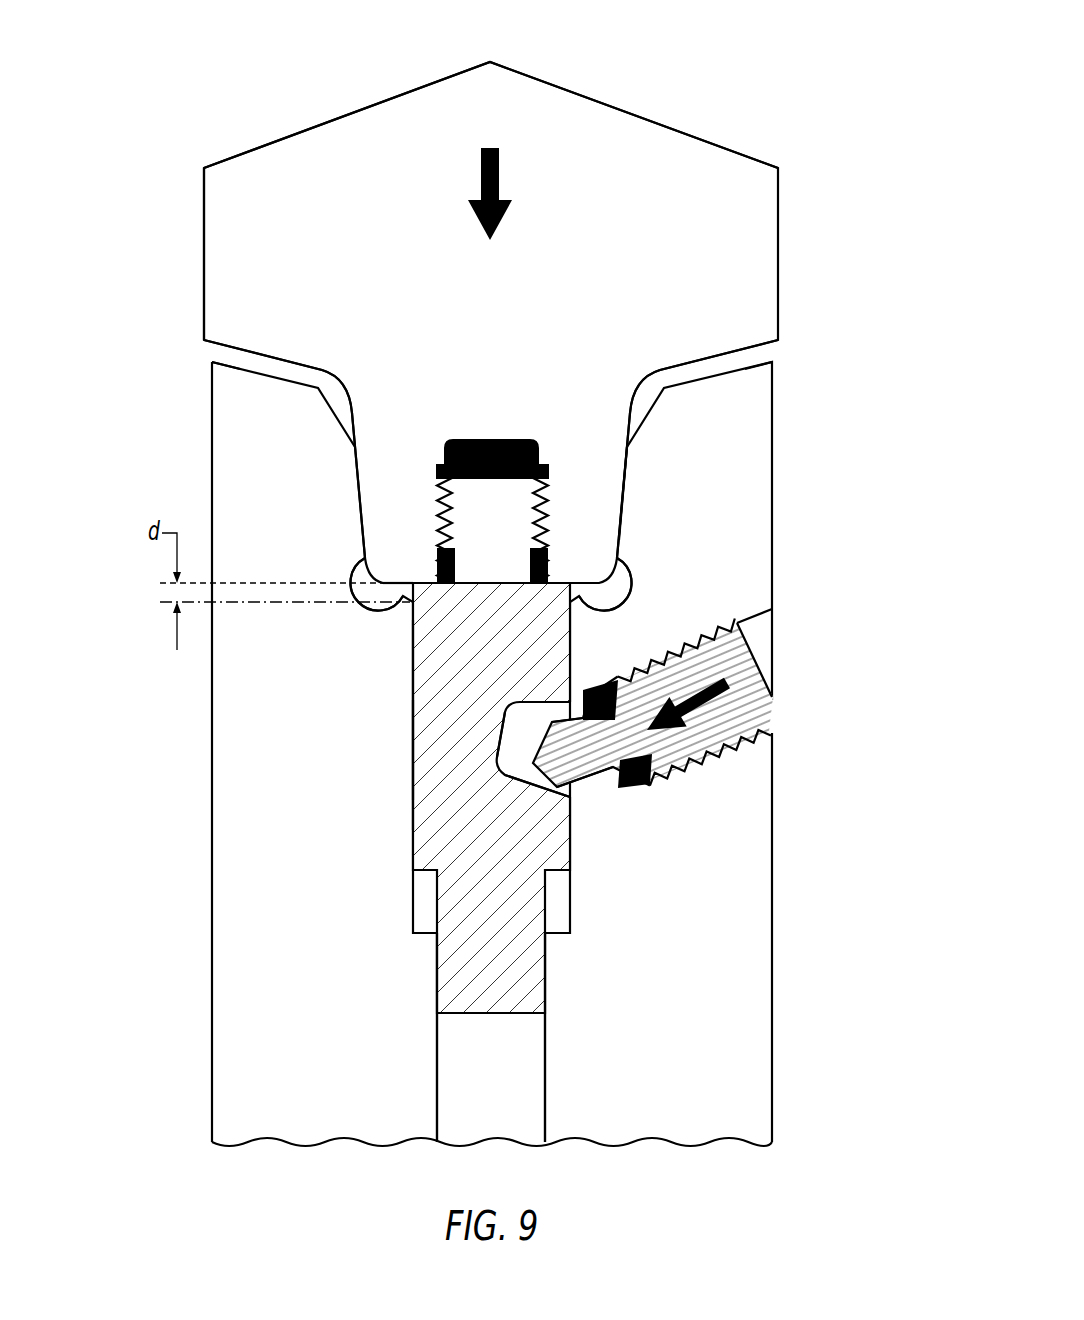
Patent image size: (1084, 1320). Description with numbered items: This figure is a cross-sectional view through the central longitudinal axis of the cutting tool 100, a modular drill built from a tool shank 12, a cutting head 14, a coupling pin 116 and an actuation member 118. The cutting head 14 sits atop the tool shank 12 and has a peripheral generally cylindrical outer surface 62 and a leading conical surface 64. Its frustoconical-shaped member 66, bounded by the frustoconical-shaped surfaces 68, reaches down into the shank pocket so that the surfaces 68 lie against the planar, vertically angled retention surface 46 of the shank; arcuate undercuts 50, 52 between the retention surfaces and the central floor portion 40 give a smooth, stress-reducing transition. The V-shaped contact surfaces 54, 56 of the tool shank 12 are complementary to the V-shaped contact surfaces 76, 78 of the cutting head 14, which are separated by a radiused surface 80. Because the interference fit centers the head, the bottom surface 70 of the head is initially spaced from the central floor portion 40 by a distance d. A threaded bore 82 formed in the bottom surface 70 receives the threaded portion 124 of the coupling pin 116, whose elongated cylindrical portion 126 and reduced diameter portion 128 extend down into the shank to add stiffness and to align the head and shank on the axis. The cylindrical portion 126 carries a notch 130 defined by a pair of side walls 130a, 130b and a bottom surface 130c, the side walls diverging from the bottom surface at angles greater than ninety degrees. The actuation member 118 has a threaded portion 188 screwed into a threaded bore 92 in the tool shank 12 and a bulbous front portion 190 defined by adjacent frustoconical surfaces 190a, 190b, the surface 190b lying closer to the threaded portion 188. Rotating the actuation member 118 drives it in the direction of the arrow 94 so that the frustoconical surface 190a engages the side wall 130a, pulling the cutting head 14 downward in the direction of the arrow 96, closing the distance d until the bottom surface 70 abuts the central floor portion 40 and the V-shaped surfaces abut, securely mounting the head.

The cutting tool 100 is at (166, 52).
The tool shank 12 is at (184, 918).
The cutting head 14 is at (810, 213).
The central floor portion 40 is at (571, 583).
The retention surface 46 is at (360, 483).
The undercut 50 is at (363, 598).
The undercut 52 is at (630, 578).
The V-shaped contact surface 54 is at (270, 357).
The V-shaped contact surface 56 is at (727, 369).
The peripheral generally cylindrical outer surface 62 is at (202, 210).
The leading conical surface 64 is at (294, 140).
The frustoconical-shaped member 66 is at (634, 534).
The frustoconical-shaped surface 68 is at (626, 512).
The bottom surface 70 is at (402, 583).
The V-shaped contact surface 76 is at (778, 350).
The V-shaped contact surface 78 is at (216, 360).
The radiused surface 80 is at (340, 400).
The threaded bore 82 is at (472, 462).
The threaded bore 92 is at (770, 628).
The arrow 94 is at (722, 700).
The arrow 96 is at (478, 170).
The coupling pin 116 is at (410, 722).
The actuation member 118 is at (738, 762).
The threaded portion 124 is at (548, 500).
The cylindrical portion 126 is at (410, 760).
The reduced diameter portion 128 is at (433, 975).
The notch 130 is at (490, 773).
The side wall 130a is at (527, 790).
The side wall 130b is at (532, 702).
The bottom surface 130c is at (506, 720).
The threaded portion 188 is at (688, 740).
The bulbous front portion 190 is at (625, 810).
The frustoconical surface 190a is at (574, 816).
The frustoconical surface 190b is at (582, 705).